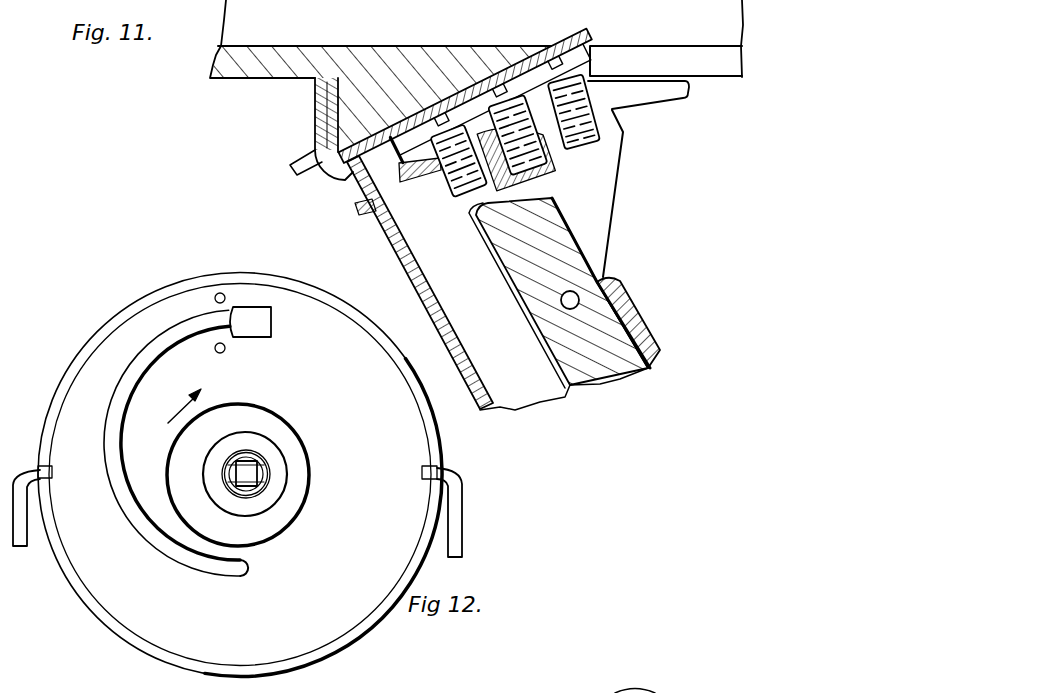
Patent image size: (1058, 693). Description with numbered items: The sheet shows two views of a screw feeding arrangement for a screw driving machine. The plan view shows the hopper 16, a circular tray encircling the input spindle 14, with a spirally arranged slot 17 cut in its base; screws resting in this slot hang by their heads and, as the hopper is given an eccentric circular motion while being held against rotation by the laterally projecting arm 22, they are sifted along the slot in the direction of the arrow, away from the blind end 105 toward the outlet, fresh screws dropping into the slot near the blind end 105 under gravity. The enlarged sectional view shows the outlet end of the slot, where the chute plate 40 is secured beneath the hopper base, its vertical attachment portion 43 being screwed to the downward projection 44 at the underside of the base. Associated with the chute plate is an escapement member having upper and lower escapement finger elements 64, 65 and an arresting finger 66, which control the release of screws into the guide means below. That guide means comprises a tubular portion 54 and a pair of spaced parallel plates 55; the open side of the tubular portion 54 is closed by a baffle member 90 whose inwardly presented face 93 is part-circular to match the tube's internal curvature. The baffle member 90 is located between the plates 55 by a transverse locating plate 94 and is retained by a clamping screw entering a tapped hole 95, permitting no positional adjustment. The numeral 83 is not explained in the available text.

In FIG. 12, the input spindle 14 is at (263, 477).
In FIG. 12, the hopper 16 is at (142, 296).
In FIG. 12, the spirally arranged slot 17 is at (158, 354).
In FIG. 12, the laterally projecting arm 22 is at (26, 548).
In FIG. 11, the chute plate 40 is at (612, 79).
In FIG. 11, the vertical attachment portion 43 is at (337, 122).
In FIG. 11, the downward projection 44 is at (353, 53).
In FIG. 11, the tubular portion 54 is at (409, 280).
In FIG. 11, the spaced parallel plates 55 is at (612, 169).
In FIG. 11, the upper escapement finger element 64 is at (513, 142).
In FIG. 11, the lower escapement finger element 65 is at (505, 178).
In FIG. 11, the arresting finger 66 is at (427, 175).
In FIG. 12, the arm 83 is at (307, 686).
In FIG. 11, the baffle member 90 is at (572, 235).
In FIG. 11, the inwardly presented face 93 is at (524, 286).
In FIG. 11, the transverse locating plate 94 is at (640, 323).
In FIG. 11, the tapped hole 95 is at (576, 297).
In FIG. 12, the blind end 105 is at (249, 576).